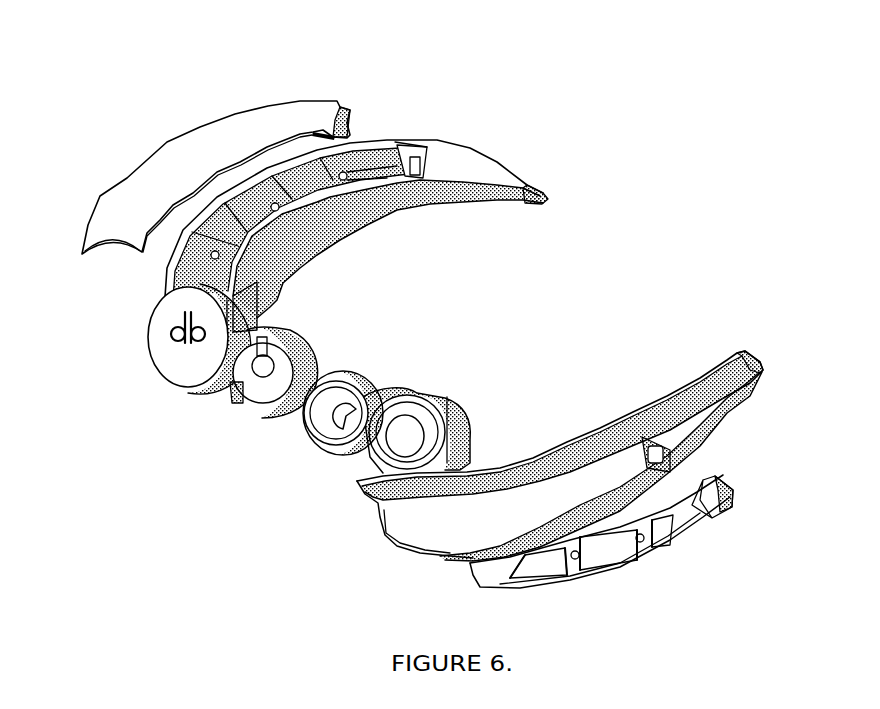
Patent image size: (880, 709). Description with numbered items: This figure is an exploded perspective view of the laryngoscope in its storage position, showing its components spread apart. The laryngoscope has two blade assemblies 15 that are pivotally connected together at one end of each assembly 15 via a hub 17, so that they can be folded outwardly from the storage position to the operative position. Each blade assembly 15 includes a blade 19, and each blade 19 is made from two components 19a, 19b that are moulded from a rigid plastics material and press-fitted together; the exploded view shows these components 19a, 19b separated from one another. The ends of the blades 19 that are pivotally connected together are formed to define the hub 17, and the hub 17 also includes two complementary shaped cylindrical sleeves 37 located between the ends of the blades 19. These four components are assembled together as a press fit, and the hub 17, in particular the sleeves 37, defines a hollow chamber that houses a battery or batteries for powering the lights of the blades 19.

The blade assembly 15 is at (368, 113).
The hub 17 is at (283, 446).
The blade 19 is at (338, 232).
The blade component 19a is at (205, 135).
The blade component 19b is at (425, 195).
The cylindrical sleeve 37 is at (350, 371).